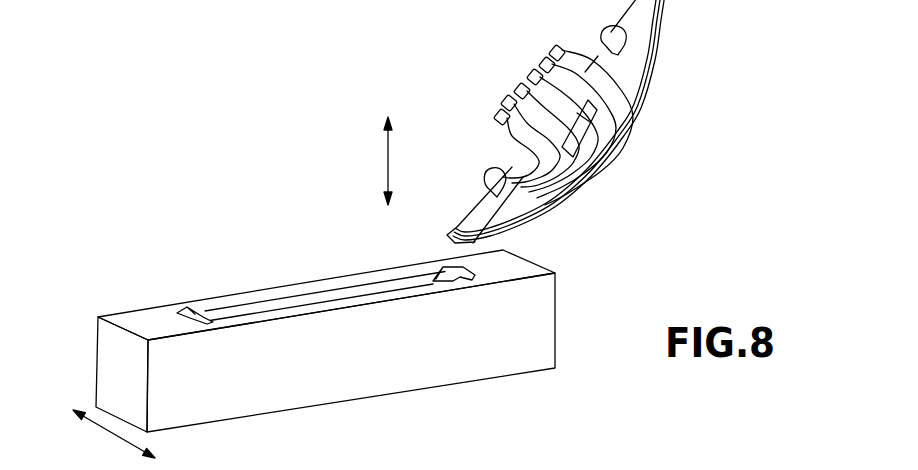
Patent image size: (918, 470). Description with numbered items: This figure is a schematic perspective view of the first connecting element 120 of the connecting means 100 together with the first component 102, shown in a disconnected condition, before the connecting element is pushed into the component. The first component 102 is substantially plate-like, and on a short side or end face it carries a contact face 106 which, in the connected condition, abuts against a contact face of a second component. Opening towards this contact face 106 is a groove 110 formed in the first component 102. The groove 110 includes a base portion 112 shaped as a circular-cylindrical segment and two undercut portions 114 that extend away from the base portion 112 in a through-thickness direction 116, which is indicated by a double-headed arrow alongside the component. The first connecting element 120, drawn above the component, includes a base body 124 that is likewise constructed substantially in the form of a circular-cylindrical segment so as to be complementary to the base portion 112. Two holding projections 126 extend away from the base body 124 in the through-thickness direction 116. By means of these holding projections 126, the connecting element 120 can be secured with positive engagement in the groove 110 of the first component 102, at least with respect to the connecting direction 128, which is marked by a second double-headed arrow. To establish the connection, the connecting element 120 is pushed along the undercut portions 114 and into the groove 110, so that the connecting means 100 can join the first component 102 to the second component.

The connecting means 100 is at (621, 235).
The first component 102 is at (217, 395).
The contact face 106 is at (127, 317).
The groove 110 is at (273, 300).
The base portion 112 is at (333, 295).
The undercut portions 114 is at (207, 322).
The through-thickness direction 116 is at (112, 436).
The first connecting element 120 is at (627, 127).
The base body 124 is at (637, 58).
The holding projections 126 is at (550, 208).
The connecting direction 128 is at (388, 164).